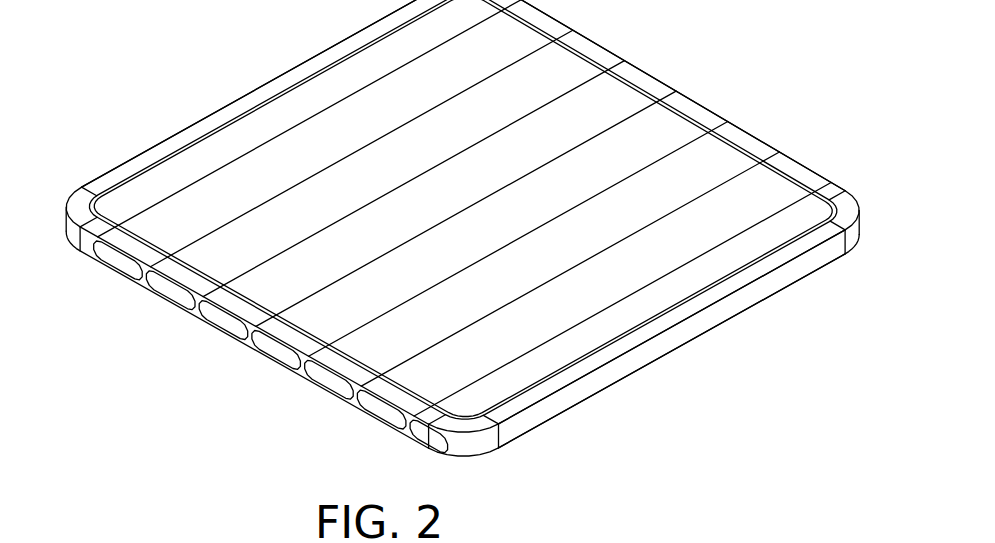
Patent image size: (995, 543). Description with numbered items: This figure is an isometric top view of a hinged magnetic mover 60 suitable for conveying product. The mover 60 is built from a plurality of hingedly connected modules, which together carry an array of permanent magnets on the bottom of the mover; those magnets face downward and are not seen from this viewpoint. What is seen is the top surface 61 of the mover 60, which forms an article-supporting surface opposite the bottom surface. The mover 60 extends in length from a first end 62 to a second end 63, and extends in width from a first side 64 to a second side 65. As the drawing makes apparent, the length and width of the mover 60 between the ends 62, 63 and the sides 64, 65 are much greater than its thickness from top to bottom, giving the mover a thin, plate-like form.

The mover 60 is at (202, 37).
The top surface 61 is at (502, 239).
The first end 62 is at (676, 350).
The second end 63 is at (303, 46).
The first side 64 is at (661, 64).
The second side 65 is at (215, 320).